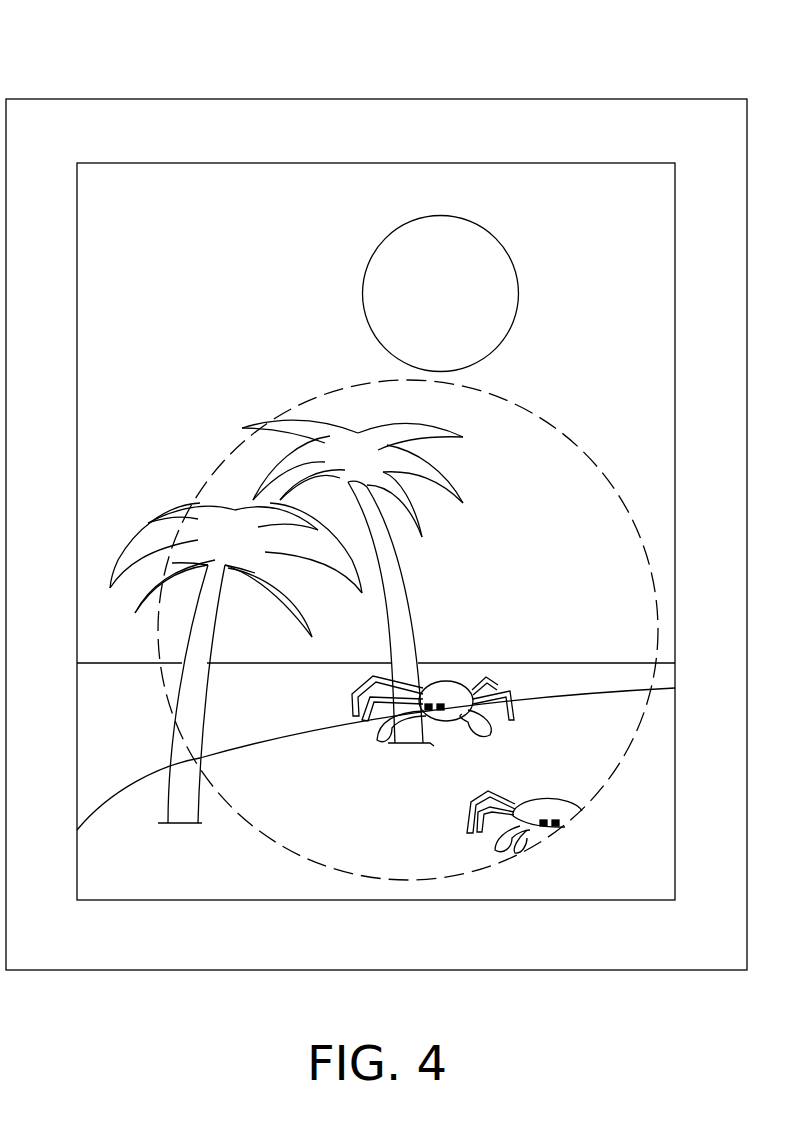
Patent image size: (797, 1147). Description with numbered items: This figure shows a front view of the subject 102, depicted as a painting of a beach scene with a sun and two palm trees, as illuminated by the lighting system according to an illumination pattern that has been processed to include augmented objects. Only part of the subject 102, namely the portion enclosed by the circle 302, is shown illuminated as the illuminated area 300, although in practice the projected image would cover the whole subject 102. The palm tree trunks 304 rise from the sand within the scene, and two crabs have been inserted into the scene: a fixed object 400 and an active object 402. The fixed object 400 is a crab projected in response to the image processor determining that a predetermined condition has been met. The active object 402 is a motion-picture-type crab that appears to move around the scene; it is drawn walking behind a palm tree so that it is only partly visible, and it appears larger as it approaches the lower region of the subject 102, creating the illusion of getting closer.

The subject 102 is at (74, 90).
The illuminated area 300 is at (560, 468).
The circle 302 is at (247, 825).
The palm tree trunks 304 is at (200, 609).
The fixed object 400 is at (567, 812).
The active object 402 is at (452, 690).